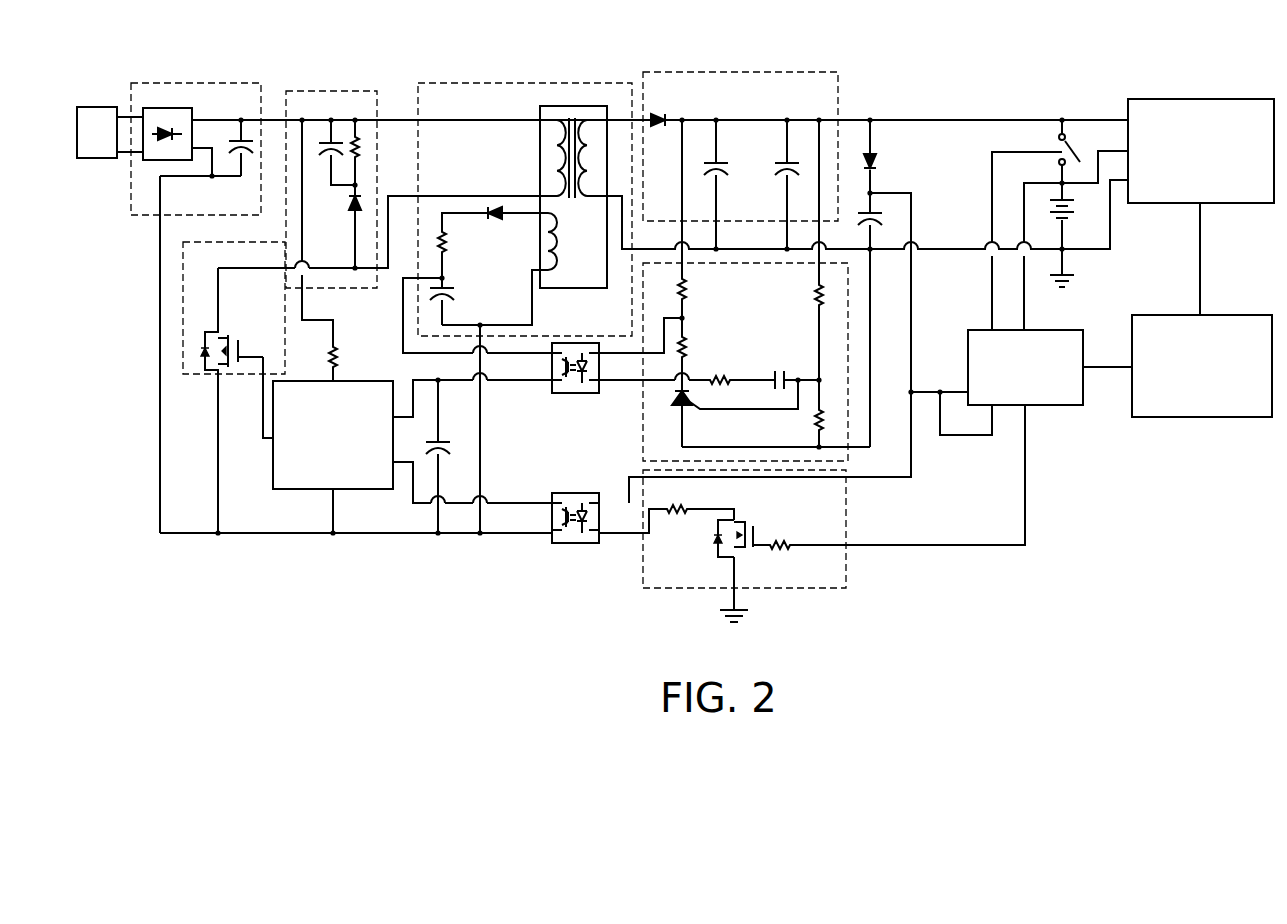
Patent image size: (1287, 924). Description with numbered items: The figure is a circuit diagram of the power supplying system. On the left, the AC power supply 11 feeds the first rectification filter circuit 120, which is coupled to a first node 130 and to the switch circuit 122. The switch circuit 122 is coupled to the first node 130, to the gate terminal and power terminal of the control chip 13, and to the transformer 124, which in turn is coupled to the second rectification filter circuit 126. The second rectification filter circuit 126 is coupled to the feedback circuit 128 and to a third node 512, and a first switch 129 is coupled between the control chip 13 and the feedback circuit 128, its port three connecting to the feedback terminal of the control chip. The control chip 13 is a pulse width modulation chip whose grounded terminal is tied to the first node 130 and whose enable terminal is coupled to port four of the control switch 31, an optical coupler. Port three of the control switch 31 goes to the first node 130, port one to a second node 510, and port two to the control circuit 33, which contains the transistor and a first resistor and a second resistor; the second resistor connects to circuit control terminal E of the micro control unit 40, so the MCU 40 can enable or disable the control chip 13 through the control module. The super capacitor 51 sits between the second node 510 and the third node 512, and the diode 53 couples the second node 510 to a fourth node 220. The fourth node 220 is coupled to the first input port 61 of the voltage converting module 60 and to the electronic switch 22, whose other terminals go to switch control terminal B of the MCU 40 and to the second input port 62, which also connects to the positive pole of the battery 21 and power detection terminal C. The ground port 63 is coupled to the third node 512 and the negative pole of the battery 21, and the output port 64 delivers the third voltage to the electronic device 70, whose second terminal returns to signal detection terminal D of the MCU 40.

The AC power supply 11 is at (97, 106).
The first rectification filter circuit 120 is at (165, 83).
The switch circuit 122 is at (353, 90).
The transformer 124 is at (502, 83).
The second rectification filter circuit 126 is at (732, 72).
The feedback circuit 128 is at (848, 450).
The first switch 129 is at (580, 392).
The first node 130 is at (218, 537).
The control chip 13 is at (272, 465).
The control switch 31 is at (573, 493).
The control circuit 33 is at (643, 567).
The micro control unit 40 is at (1063, 407).
The electronic device 70 is at (1197, 418).
The voltage converting module 60 is at (1200, 97).
The first input port 61 is at (1128, 150).
The second input port 62 is at (1128, 118).
The ground port 63 is at (1123, 182).
The output port 64 is at (1207, 203).
The battery 21 is at (1075, 215).
The electronic switch 22 is at (1062, 137).
The super capacitor 51 is at (858, 210).
The diode 53 is at (877, 160).
The fourth node 220 is at (870, 120).
The second node 510 is at (911, 392).
The third node 512 is at (870, 250).